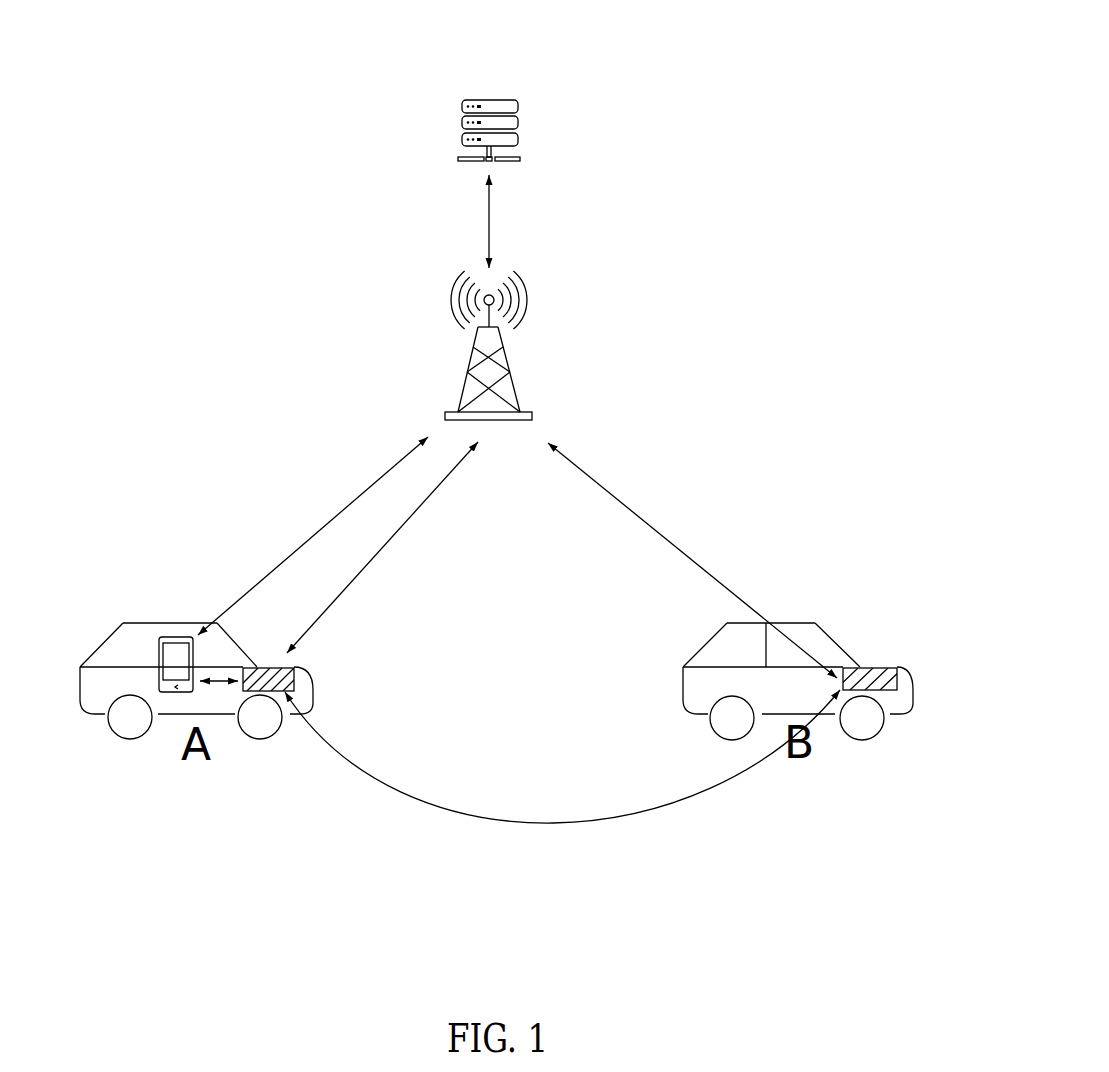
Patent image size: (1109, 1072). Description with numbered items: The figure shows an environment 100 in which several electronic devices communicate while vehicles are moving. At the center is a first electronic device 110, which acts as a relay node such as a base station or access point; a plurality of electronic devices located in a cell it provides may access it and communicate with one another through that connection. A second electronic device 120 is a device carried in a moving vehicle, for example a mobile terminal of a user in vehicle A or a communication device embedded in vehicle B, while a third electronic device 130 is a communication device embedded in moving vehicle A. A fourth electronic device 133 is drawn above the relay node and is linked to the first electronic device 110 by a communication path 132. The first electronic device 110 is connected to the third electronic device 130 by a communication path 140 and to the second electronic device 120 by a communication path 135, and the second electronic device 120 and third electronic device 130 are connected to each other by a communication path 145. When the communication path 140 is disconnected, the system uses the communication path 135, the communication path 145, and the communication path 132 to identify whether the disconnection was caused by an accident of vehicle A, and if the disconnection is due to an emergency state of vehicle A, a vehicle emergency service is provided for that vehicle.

The environment 100 is at (791, 45).
The first electronic device 110 is at (508, 353).
The second electronic device 120 is at (176, 637).
The third electronic device 130 is at (296, 676).
The communication path 132 is at (490, 220).
The fourth electronic device 133 is at (508, 100).
The communication path 135 is at (312, 535).
The communication path 140 is at (390, 548).
The communication path 145 is at (218, 683).